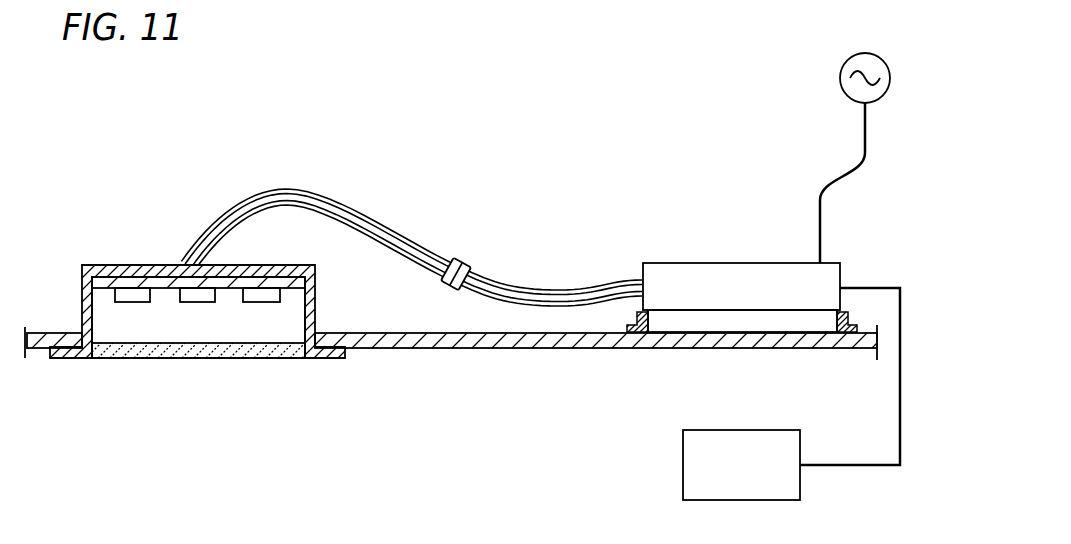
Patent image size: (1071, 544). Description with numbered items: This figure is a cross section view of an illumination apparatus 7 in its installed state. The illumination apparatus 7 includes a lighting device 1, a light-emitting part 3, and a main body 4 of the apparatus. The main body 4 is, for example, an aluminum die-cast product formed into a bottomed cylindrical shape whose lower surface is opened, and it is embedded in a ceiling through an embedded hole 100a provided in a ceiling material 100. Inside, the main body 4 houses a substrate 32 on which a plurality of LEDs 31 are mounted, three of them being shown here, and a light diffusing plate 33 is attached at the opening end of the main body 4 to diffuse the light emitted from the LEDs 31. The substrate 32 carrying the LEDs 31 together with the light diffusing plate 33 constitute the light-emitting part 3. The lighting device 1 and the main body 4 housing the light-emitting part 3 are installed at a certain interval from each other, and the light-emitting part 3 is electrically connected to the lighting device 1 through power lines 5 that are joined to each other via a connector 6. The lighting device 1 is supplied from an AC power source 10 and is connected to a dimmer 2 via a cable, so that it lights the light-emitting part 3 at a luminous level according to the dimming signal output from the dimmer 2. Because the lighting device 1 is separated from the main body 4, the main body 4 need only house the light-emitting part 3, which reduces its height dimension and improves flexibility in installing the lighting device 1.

The lighting device 1 is at (738, 267).
The dimmer 2 is at (745, 432).
The light-emitting part 3 is at (198, 330).
The main body 4 is at (83, 300).
The power lines 5 is at (367, 220).
The connector 6 is at (465, 266).
The illumination apparatus 7 is at (573, 195).
The AC power source 10 is at (843, 90).
The LEDs 31 is at (135, 302).
The substrate 32 is at (150, 283).
The light diffusing plate 33 is at (158, 352).
The ceiling material 100 is at (523, 342).
The embedded hole 100a is at (307, 333).